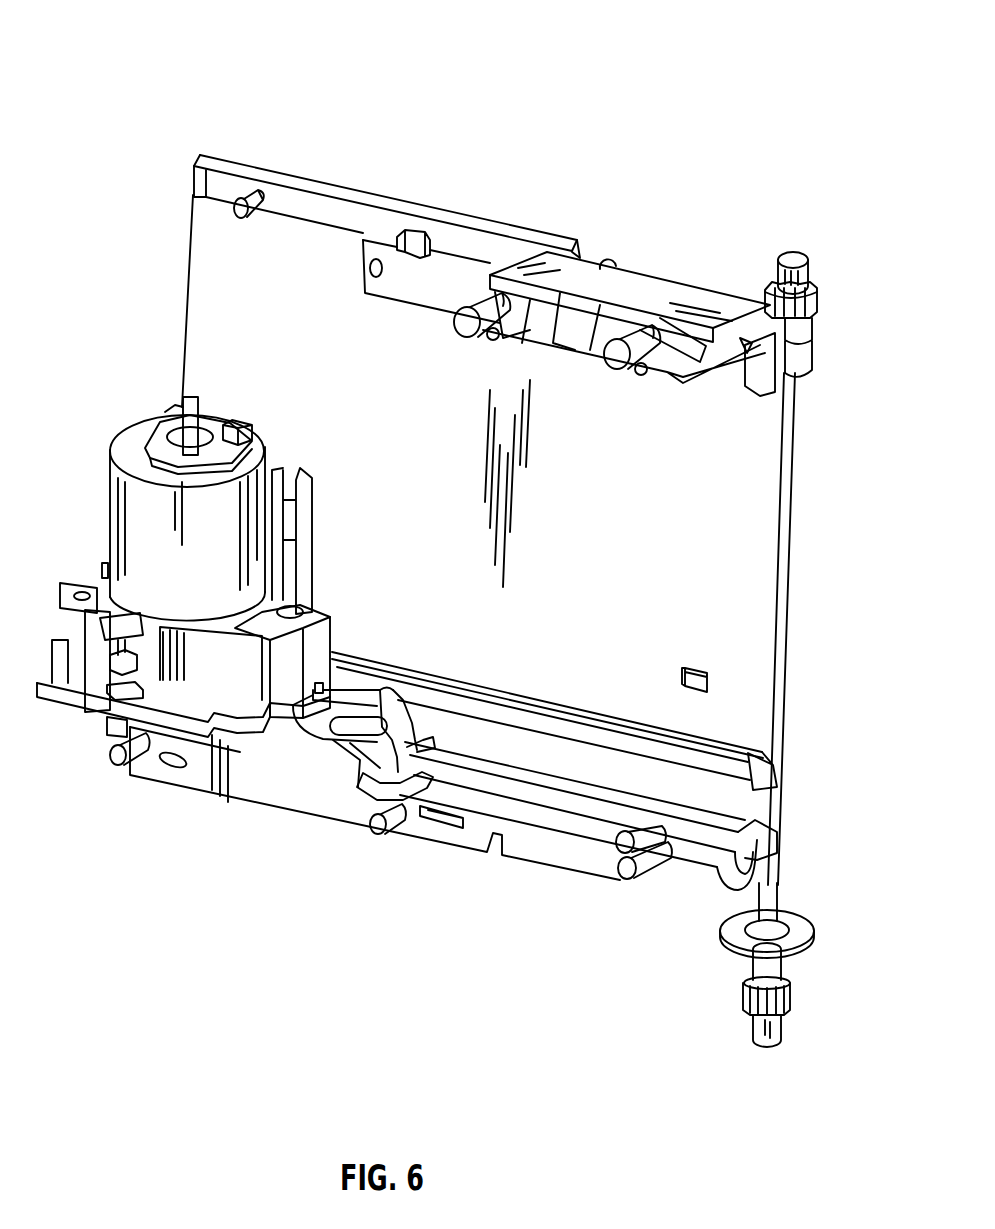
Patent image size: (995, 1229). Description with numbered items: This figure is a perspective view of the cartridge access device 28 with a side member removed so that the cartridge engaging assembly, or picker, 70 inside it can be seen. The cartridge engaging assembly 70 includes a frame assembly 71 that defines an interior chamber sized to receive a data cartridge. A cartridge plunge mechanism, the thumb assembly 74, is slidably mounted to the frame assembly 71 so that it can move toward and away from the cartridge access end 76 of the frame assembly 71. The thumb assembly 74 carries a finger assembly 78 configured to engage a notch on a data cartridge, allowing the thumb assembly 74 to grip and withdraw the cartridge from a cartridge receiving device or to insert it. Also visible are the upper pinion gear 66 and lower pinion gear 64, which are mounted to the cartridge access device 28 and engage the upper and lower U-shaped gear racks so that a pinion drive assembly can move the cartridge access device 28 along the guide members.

The cartridge engaging assembly 70 is at (146, 78).
The frame assembly 71 is at (462, 208).
The upper pinion gear 66 is at (817, 290).
The cartridge access device 28 is at (800, 524).
The cartridge access end 76 is at (788, 668).
The thumb assembly 74 is at (100, 510).
The finger assembly 78 is at (298, 738).
The lower pinion gear 64 is at (795, 993).